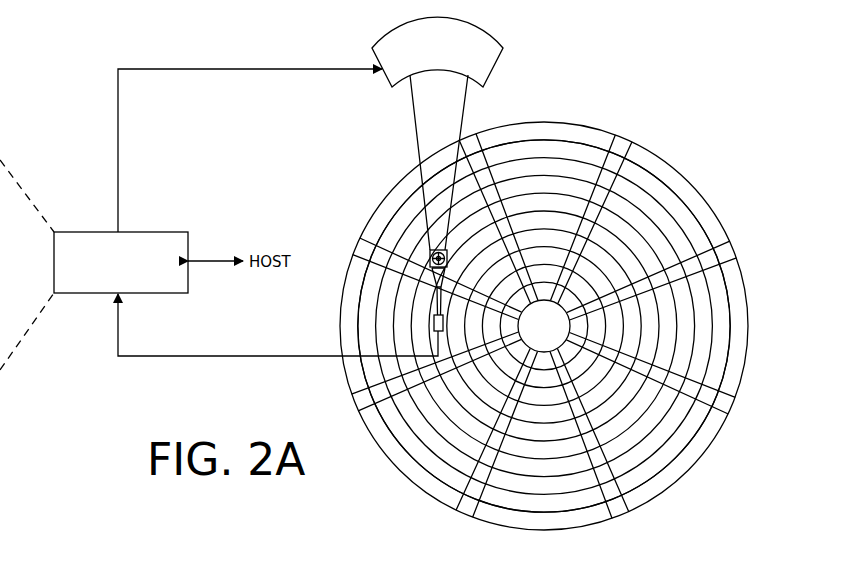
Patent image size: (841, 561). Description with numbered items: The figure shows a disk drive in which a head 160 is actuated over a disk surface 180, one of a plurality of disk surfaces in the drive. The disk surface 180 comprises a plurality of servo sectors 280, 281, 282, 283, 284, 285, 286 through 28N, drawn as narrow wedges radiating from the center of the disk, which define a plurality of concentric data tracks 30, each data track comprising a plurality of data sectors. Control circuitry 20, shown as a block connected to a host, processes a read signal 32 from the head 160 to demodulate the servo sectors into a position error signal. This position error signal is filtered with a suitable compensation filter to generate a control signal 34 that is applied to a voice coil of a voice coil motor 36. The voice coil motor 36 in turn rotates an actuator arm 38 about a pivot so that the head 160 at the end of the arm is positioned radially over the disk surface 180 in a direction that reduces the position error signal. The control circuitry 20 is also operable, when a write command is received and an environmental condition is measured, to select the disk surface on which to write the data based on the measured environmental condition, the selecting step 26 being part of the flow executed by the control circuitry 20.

The head 160 is at (446, 318).
The disk surface 180 is at (685, 171).
The control circuitry 20 is at (157, 233).
The step of selecting a disk surface 26 is at (158, 557).
The servo sector 280 is at (622, 142).
The servo sector 281 is at (730, 248).
The servo sector 282 is at (727, 404).
The servo sector 283 is at (614, 510).
The servo sector 284 is at (465, 508).
The servo sector 285 is at (358, 402).
The servo sector 286 is at (361, 244).
The servo sector 28N is at (470, 142).
The data tracks 30 is at (547, 146).
The read signal 32 is at (232, 357).
The control signal 34 is at (117, 138).
The voice coil motor 36 is at (383, 72).
The actuator arm 38 is at (416, 150).